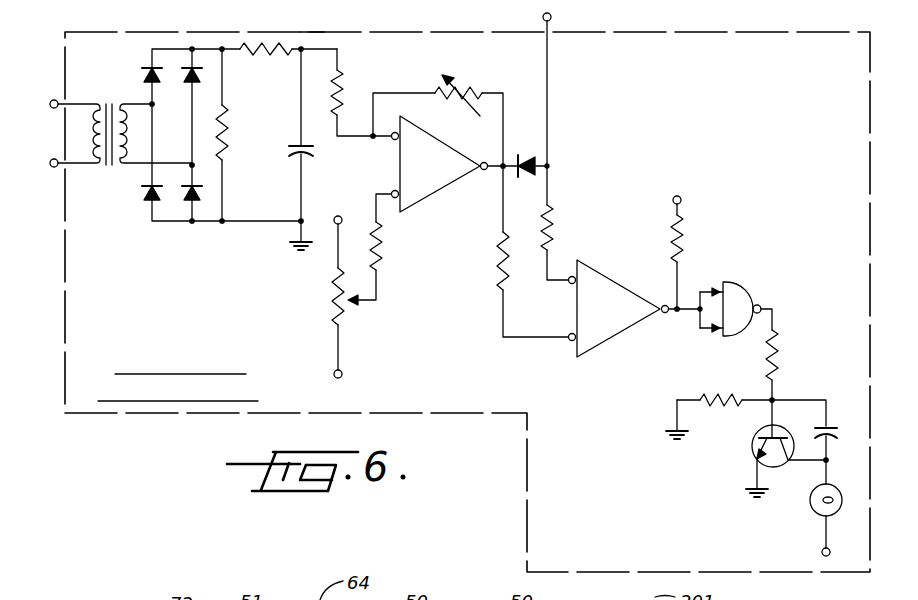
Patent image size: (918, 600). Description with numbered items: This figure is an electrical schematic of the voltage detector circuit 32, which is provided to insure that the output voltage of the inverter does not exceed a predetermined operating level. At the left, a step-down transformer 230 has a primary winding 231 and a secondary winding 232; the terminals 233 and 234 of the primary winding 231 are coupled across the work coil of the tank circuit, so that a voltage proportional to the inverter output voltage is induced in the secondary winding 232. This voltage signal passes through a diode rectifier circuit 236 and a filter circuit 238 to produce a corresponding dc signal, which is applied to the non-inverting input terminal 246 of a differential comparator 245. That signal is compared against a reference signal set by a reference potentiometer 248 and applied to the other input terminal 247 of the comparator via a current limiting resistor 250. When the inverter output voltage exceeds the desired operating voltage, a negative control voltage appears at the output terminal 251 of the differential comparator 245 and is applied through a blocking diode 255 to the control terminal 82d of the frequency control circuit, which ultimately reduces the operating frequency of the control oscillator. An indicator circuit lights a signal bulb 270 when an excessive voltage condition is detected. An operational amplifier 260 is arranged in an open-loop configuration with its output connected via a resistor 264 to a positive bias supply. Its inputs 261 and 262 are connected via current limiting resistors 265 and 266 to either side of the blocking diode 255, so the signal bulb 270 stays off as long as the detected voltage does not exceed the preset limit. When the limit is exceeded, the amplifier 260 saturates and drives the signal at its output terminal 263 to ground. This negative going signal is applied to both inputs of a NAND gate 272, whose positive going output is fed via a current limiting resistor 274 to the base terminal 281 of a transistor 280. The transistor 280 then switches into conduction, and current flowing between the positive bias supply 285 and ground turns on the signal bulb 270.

The voltage detector circuit 32 is at (158, 417).
The control terminal 82d is at (552, 20).
The step-down transformer 230 is at (107, 159).
The primary winding 231 is at (88, 141).
The secondary winding 232 is at (132, 106).
The terminal 233 is at (52, 100).
The terminal 234 is at (52, 167).
The diode rectifier circuit 236 is at (148, 50).
The filter circuit 238 is at (338, 42).
The differential comparator 245 is at (427, 191).
The non-inverting input terminal 246 is at (392, 140).
The non-inverting input terminal 247 is at (394, 200).
The reference potentiometer 248 is at (350, 317).
The current limiting resistor 250 is at (382, 258).
The output terminal 251 is at (487, 160).
The blocking diode 255 is at (538, 155).
The operational amplifier 260 is at (607, 345).
The inverting input 261 is at (569, 284).
The non-inverting input 262 is at (570, 342).
The output terminal 263 is at (665, 302).
The resistor 264 is at (688, 242).
The current limiting resistor 265 is at (553, 237).
The current limiting resistor 266 is at (500, 284).
The signal bulb 270 is at (822, 512).
The NAND gate 272 is at (745, 292).
The current limiting resistor 274 is at (782, 357).
The transistor 280 is at (760, 453).
The base terminal 281 is at (775, 412).
The positive bias supply 285 is at (829, 558).